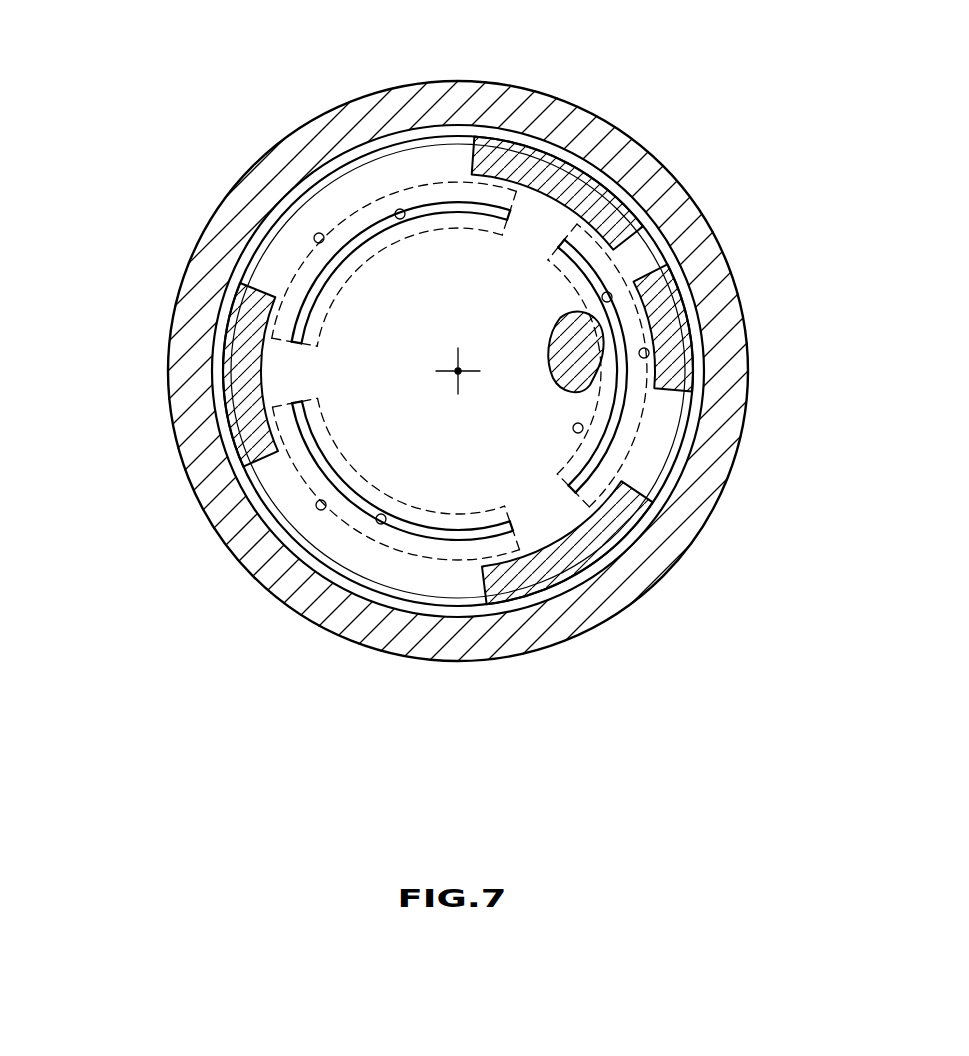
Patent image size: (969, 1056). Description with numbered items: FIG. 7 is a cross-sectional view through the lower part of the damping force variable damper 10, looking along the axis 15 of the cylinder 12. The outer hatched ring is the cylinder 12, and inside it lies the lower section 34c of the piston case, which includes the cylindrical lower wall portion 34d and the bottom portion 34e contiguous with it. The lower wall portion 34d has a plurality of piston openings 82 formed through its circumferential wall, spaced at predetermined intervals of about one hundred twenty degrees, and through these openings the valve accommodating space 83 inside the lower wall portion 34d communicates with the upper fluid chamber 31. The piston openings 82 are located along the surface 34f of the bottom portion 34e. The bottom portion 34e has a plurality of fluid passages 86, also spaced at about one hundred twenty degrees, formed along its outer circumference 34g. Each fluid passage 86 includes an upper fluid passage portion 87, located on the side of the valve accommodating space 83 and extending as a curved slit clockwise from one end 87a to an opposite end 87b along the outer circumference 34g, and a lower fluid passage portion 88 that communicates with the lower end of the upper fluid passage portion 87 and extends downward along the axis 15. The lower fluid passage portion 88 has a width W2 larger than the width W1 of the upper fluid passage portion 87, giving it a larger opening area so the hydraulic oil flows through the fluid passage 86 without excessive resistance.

The damping force variable damper 10 is at (197, 168).
The cylinder 12 is at (176, 329).
The axis 15 is at (453, 380).
The upper fluid chamber 31 is at (672, 241).
The lower section 34c is at (372, 785).
The lower wall portion 34d is at (598, 578).
The bottom portion 34e is at (400, 603).
The surface 34f is at (342, 380).
The outer circumference 34g is at (465, 605).
The piston opening 82 is at (456, 135).
The valve accommodating space 83 is at (442, 325).
The fluid passage 86 is at (250, 85).
The upper fluid passage portion 87 is at (402, 208).
The one end 87a is at (263, 307).
The opposite end 87b is at (500, 200).
The lower fluid passage portion 88 is at (316, 235).
The width W1 is at (540, 230).
The width W2 is at (600, 404).